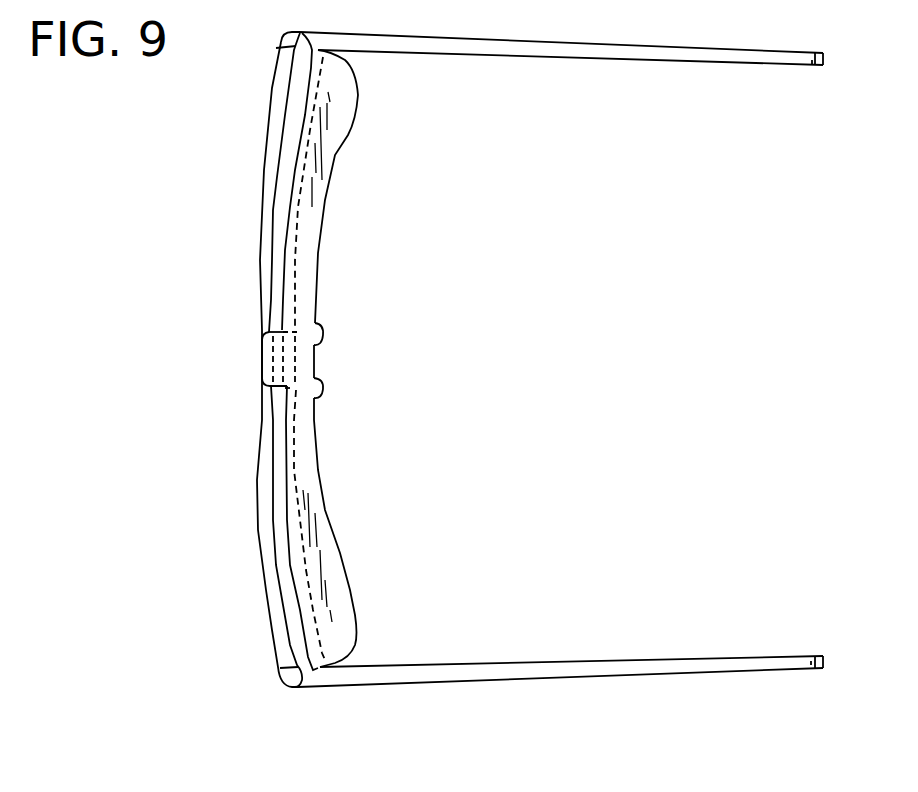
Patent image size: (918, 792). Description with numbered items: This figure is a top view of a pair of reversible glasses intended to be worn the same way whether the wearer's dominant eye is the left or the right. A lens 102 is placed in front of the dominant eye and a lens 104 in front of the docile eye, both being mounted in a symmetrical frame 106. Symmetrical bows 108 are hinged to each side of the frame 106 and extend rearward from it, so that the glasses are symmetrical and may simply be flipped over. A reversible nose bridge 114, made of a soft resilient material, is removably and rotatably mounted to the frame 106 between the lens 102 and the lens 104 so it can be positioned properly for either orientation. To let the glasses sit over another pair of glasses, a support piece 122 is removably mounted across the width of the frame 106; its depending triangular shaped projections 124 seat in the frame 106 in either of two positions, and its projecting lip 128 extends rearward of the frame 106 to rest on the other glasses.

The lens 102 is at (258, 538).
The lens 104 is at (262, 168).
The frame 106 is at (272, 196).
The bows 108 is at (601, 56).
The nose bridge 114 is at (322, 390).
The support piece 122 is at (317, 283).
The triangular shaped projections 124 is at (262, 360).
The projecting lip 128 is at (327, 133).